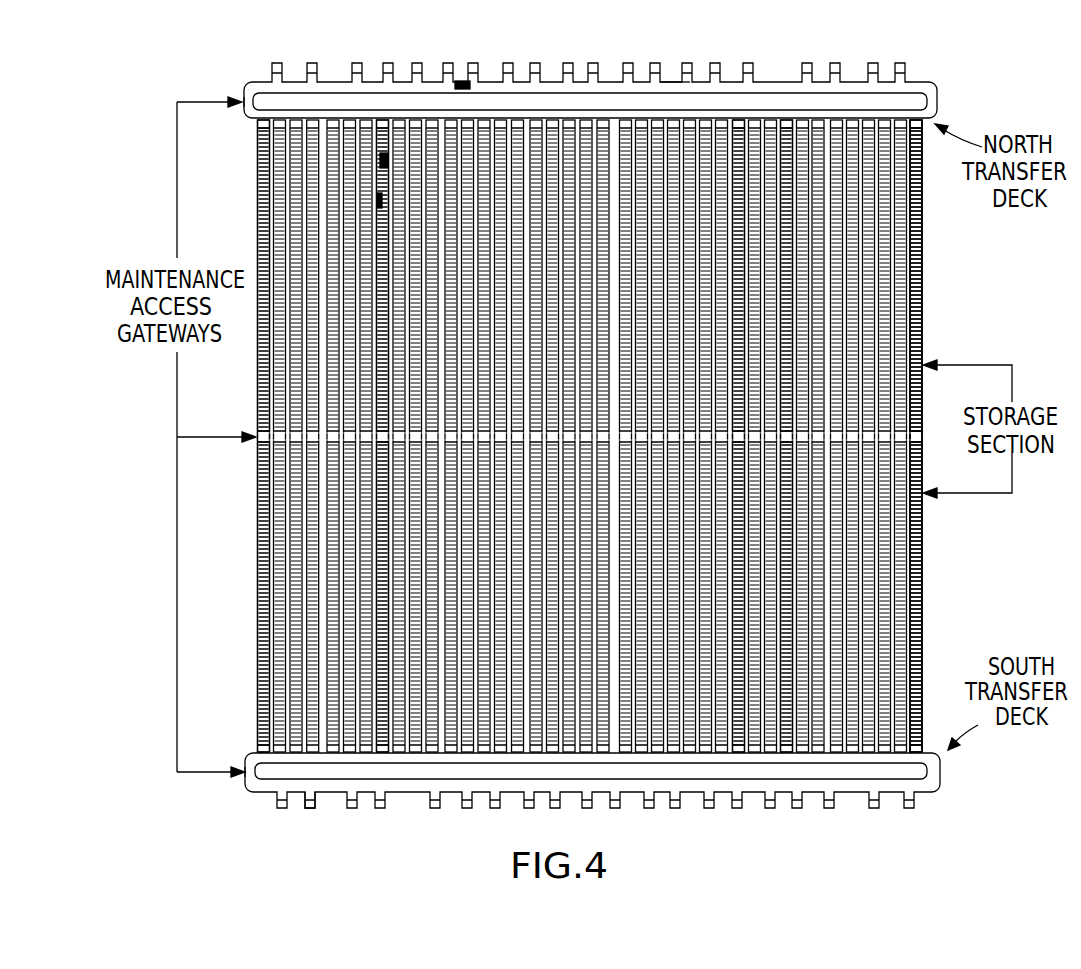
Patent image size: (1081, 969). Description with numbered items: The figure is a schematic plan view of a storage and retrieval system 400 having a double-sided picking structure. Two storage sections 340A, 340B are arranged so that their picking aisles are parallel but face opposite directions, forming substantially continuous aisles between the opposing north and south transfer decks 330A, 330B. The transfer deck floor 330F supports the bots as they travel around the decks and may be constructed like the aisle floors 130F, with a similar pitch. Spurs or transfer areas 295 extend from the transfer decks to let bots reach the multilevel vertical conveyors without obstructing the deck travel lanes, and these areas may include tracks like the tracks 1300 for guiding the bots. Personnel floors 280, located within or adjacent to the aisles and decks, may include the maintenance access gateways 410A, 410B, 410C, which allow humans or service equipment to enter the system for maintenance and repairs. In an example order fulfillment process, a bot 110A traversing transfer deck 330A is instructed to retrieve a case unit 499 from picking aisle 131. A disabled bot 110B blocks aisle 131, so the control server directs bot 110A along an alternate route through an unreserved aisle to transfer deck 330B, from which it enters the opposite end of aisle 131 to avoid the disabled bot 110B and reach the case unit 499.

The storage and retrieval system 400 is at (208, 850).
The transfer deck 330A is at (938, 88).
The transfer deck 330B is at (940, 790).
The transfer deck floor 330F is at (672, 82).
The bot 110A is at (462, 81).
The disabled bot 110B is at (382, 158).
The picking aisle 131 is at (384, 150).
The case unit 499 is at (378, 200).
The aisle floor 130F is at (791, 135).
The storage section 340A is at (920, 313).
The storage section 340B is at (920, 576).
The tracks 1300 is at (261, 652).
The personnel floors 280 is at (744, 735).
The transfer areas 295 is at (318, 810).
The maintenance access gateway 410A is at (243, 100).
The maintenance access gateway 410B is at (255, 440).
The maintenance access gateway 410C is at (245, 775).